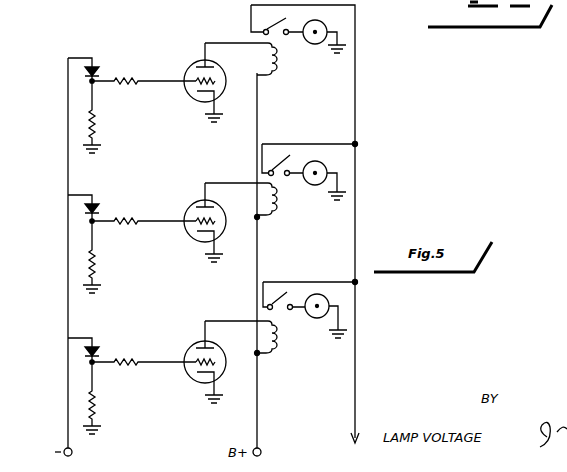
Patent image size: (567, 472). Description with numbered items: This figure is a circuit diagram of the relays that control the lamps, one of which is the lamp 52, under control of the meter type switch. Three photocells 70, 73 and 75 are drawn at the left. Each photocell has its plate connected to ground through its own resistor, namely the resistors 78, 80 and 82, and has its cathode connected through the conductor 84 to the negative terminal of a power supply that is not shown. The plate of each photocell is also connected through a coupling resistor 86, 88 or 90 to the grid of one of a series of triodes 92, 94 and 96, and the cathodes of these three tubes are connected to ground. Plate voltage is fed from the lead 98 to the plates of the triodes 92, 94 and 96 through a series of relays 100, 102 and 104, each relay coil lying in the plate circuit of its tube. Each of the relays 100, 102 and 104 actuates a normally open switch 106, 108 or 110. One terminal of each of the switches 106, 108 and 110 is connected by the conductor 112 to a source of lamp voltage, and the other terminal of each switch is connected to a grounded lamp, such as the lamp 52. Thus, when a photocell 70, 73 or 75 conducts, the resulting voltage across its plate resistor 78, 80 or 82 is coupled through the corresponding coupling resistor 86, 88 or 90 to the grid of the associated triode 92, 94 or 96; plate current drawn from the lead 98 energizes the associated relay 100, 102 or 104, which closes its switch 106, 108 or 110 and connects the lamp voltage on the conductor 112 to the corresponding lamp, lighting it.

The lamp 52 is at (310, 45).
The photocell 70 is at (95, 67).
The photocell 73 is at (96, 204).
The photocell 75 is at (97, 347).
The resistor 78 is at (98, 127).
The resistor 80 is at (97, 255).
The resistor 82 is at (97, 398).
The conductor 84 is at (68, 304).
The coupling resistor 86 is at (131, 78).
The coupling resistor 88 is at (131, 218).
The coupling resistor 90 is at (130, 359).
The triode 92 is at (222, 74).
The triode 94 is at (189, 241).
The triode 96 is at (197, 342).
The lead 98 is at (257, 407).
The relay 100 is at (276, 353).
The relay 102 is at (283, 209).
The relay 104 is at (271, 73).
The normally open switch 106 is at (287, 292).
The normally open switch 108 is at (290, 155).
The normally open switch 110 is at (285, 19).
The conductor 112 is at (355, 93).